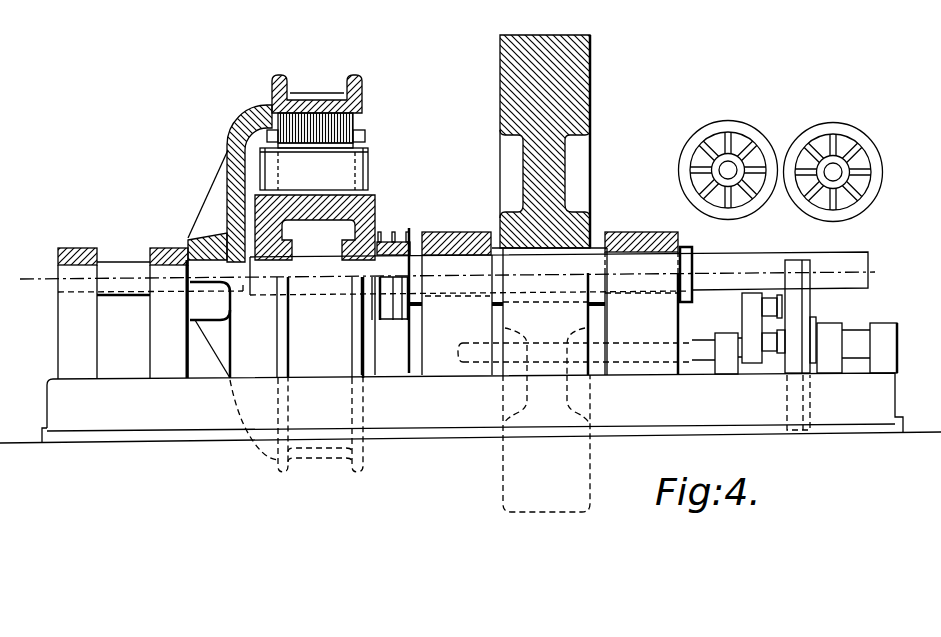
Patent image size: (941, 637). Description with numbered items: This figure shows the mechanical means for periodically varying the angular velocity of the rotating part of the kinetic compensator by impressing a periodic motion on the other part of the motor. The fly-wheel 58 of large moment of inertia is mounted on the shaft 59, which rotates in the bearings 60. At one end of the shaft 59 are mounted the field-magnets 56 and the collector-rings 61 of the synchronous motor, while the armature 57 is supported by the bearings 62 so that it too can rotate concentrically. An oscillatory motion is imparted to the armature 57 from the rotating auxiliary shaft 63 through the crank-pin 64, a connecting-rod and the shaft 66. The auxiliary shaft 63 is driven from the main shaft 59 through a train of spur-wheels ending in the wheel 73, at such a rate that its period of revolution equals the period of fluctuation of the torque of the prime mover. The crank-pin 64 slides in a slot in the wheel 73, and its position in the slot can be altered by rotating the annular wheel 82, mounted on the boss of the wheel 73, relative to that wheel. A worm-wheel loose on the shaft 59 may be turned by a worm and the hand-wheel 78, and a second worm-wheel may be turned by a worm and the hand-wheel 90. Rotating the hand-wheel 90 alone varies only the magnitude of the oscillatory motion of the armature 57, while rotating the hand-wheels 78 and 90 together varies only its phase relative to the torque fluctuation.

The field-magnets 56 is at (355, 168).
The armature 57 is at (360, 126).
The fly-wheel 58 is at (588, 58).
The shaft 59 is at (870, 264).
The bearings 60 is at (465, 232).
The collector-rings 61 is at (393, 232).
The bearings 62 is at (123, 299).
The auxiliary shaft 63 is at (857, 337).
The crank-pin 64 is at (775, 350).
The shaft 66 is at (697, 348).
The wheel 73 is at (795, 262).
The hand-wheel 78 is at (733, 123).
The annular wheel 82 is at (805, 298).
The hand-wheel 90 is at (836, 128).